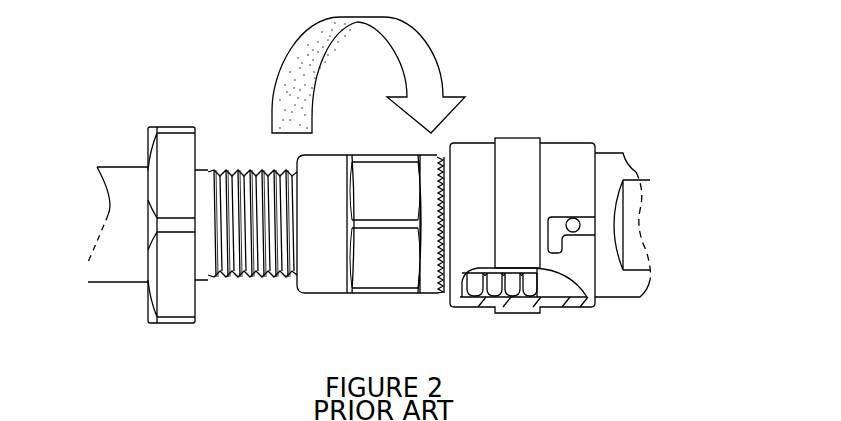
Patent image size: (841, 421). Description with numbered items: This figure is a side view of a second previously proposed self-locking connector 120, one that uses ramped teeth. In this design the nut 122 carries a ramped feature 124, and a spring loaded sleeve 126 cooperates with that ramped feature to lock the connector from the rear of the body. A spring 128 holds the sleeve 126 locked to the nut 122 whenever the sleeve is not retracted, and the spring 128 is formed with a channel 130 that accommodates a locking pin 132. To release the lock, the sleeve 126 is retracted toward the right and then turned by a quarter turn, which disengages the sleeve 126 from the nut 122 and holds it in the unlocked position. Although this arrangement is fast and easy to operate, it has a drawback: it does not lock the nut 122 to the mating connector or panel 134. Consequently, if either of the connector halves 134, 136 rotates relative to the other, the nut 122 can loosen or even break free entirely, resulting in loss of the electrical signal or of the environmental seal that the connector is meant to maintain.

The self-locking connector 120 is at (572, 322).
The nut 122 is at (373, 262).
The ramped feature 124 is at (438, 297).
The spring loaded sleeve 126 is at (515, 152).
The spring 128 is at (493, 287).
The channel 130 is at (557, 248).
The locking pin 132 is at (578, 219).
The mating connector or panel 134 is at (175, 290).
The connector half 136 is at (632, 230).